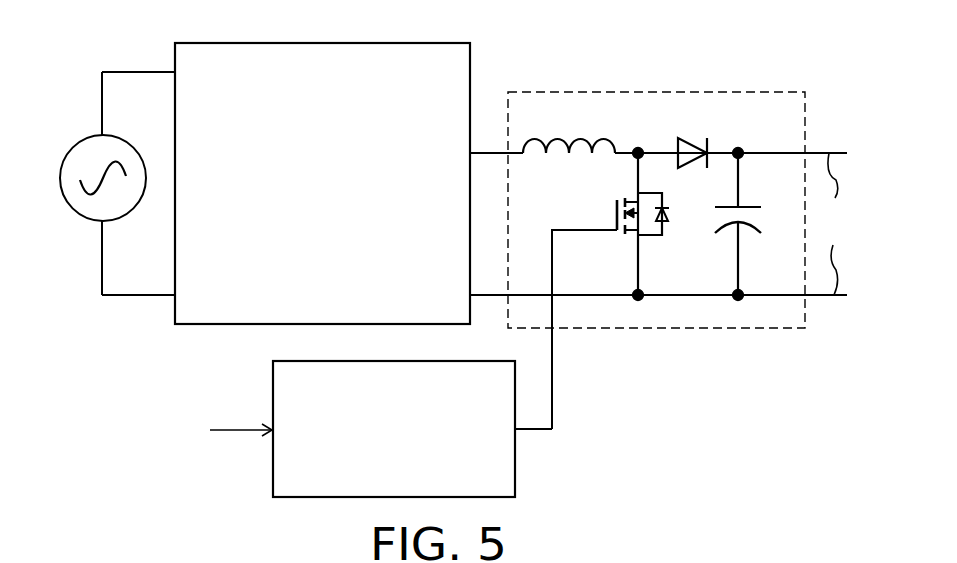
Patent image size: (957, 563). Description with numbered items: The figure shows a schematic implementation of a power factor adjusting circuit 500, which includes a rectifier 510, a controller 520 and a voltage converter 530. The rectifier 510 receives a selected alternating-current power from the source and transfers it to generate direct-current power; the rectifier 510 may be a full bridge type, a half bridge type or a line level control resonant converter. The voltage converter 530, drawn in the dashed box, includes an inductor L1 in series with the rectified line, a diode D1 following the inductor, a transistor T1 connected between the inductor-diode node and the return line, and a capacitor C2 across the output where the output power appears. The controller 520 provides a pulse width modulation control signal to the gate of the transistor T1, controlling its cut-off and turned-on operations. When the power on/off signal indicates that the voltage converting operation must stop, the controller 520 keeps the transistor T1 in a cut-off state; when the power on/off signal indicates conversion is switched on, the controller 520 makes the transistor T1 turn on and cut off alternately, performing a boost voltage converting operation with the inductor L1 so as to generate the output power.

The power factor adjusting circuit 500 is at (464, 253).
The rectifier 510 is at (348, 43).
The controller 520 is at (515, 470).
The voltage converter 530 is at (670, 92).
The inductor L1 is at (569, 127).
The diode D1 is at (686, 137).
The transistor T1 is at (612, 214).
The capacitor C2 is at (756, 224).